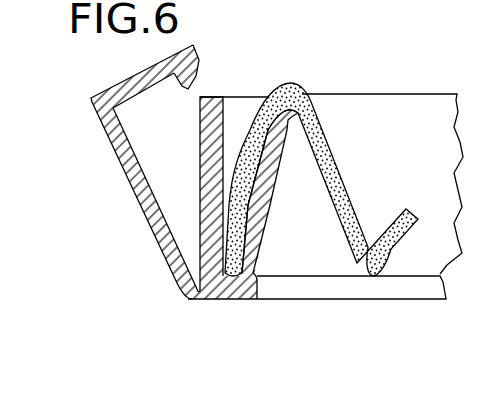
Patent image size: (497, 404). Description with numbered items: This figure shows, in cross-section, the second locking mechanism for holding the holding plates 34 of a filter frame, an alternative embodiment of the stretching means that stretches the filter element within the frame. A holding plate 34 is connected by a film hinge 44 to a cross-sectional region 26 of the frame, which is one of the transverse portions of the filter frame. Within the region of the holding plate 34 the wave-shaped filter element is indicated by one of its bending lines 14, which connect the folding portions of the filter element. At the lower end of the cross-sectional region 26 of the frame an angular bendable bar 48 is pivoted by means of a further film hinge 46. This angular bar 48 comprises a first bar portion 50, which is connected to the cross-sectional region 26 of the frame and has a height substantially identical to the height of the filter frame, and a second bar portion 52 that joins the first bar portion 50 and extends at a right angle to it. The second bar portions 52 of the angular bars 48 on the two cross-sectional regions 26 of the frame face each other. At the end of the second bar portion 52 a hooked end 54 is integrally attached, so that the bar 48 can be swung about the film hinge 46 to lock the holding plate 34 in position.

The bending lines 14 is at (296, 98).
The transverse portion of the frame 26 is at (212, 256).
The holding plate 34 is at (263, 218).
The film hinge 44 is at (247, 271).
The film hinge 46 is at (198, 300).
The angular bendable bar 48 is at (128, 186).
The first bar portion 50 is at (163, 239).
The second bar portion 52 is at (138, 82).
The hooked end 54 is at (191, 74).